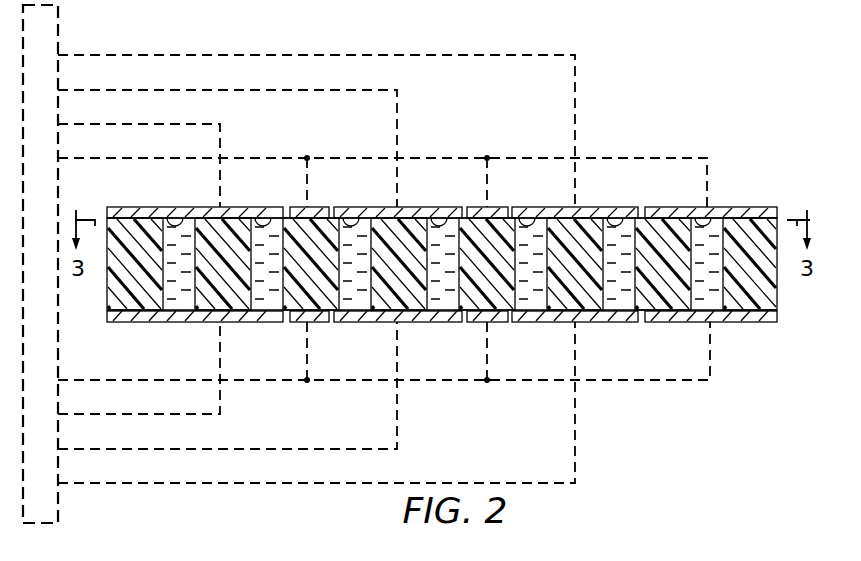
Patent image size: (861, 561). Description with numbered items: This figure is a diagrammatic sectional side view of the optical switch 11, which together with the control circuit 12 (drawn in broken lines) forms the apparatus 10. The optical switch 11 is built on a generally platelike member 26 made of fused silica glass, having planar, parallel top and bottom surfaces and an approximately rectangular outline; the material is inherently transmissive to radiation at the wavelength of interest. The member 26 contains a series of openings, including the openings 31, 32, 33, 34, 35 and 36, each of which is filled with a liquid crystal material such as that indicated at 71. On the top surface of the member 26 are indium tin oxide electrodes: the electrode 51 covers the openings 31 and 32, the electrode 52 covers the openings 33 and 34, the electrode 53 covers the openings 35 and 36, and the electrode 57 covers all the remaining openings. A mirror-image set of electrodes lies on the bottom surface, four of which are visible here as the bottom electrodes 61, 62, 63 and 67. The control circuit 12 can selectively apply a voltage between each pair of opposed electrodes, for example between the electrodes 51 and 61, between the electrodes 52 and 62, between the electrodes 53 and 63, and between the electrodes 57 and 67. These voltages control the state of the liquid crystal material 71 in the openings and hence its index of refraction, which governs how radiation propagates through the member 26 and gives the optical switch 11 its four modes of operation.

The apparatus 10 is at (678, 64).
The optical switch 11 is at (784, 304).
The control circuit 12 is at (58, 42).
The platelike member 26 is at (762, 275).
The opening 31 is at (173, 214).
The opening 32 is at (262, 214).
The opening 33 is at (351, 214).
The opening 34 is at (440, 214).
The opening 35 is at (527, 214).
The opening 36 is at (615, 214).
The electrode 51 is at (142, 211).
The electrode 52 is at (394, 211).
The electrode 53 is at (561, 211).
The electrode 57 is at (744, 211).
The bottom electrode 61 is at (184, 323).
The bottom electrode 62 is at (371, 323).
The bottom electrode 63 is at (555, 323).
The bottom electrode 67 is at (683, 323).
The liquid crystal material 71 is at (718, 323).